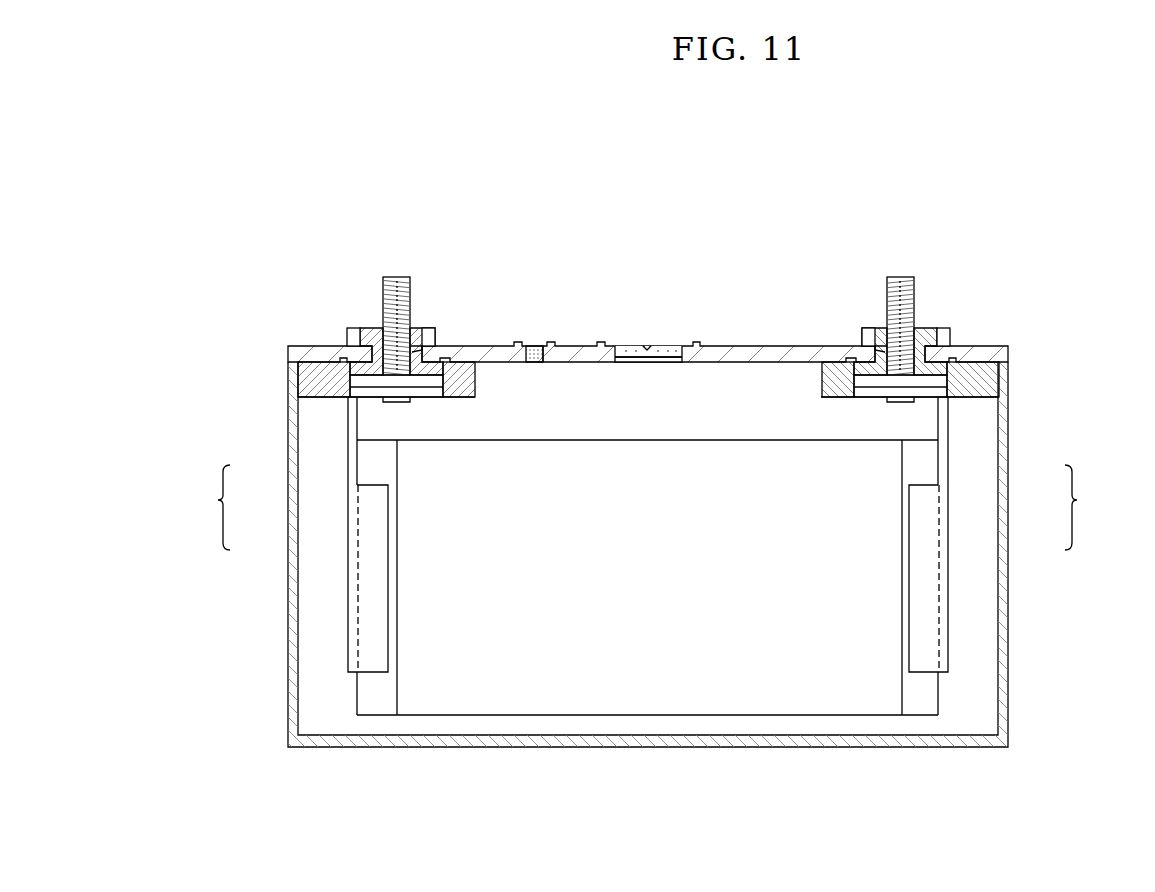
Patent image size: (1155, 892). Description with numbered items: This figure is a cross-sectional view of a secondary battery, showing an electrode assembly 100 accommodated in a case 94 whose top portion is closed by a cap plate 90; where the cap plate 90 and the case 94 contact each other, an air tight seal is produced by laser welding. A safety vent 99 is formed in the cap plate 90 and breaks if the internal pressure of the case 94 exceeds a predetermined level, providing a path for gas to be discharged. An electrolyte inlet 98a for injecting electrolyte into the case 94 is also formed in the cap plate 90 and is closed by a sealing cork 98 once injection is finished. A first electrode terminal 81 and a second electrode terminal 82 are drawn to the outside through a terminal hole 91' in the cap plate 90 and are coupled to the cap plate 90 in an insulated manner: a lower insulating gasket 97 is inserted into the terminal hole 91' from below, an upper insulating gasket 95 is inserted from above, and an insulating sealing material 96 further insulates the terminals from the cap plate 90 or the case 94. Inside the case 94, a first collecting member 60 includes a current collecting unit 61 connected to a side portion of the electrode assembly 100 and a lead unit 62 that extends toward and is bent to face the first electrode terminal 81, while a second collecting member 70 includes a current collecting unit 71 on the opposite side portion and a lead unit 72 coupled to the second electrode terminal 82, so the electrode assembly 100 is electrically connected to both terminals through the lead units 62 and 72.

The first electrode terminal 81 is at (395, 275).
The second electrode terminal 82 is at (900, 275).
The cap plate 90 is at (730, 336).
The terminal hole 91' is at (648, 319).
The case 94 is at (728, 740).
The upper insulating gasket 95 is at (350, 338).
The insulating sealing material 96 is at (350, 368).
The lower insulating gasket 97 is at (365, 378).
The sealing cork 98 is at (530, 345).
The electrolyte inlet 98a is at (545, 347).
The safety vent 99 is at (662, 345).
The electrode assembly 100 is at (632, 578).
The first collecting member 60 is at (209, 507).
The current collecting unit 61 is at (350, 555).
The lead unit 62 is at (355, 468).
The second collecting member 70 is at (1087, 507).
The current collecting unit 71 is at (948, 555).
The lead unit 72 is at (945, 468).